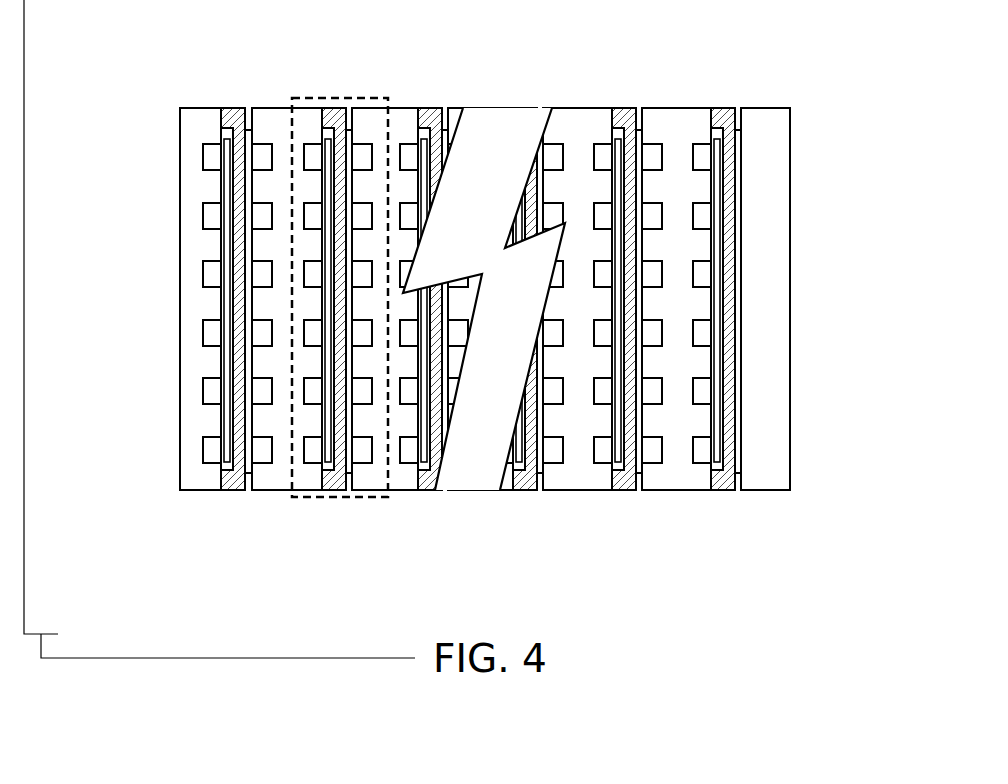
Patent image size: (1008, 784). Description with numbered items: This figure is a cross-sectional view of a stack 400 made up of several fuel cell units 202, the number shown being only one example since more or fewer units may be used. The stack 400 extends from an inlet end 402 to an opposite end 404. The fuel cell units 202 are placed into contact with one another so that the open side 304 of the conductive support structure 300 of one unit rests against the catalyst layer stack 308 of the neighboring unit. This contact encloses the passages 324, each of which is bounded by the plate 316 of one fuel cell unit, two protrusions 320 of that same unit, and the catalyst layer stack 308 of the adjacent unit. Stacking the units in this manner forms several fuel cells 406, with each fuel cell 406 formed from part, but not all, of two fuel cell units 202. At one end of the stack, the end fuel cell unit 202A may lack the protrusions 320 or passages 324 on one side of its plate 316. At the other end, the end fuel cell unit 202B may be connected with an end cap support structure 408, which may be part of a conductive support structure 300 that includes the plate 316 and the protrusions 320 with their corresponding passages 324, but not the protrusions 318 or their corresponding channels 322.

The stack 400 is at (186, 72).
The inlet end 402 is at (794, 287).
The opposite end 404 is at (176, 296).
The fuel cell 406 is at (343, 98).
The end cap support structure 408 is at (742, 498).
The fuel cell unit 202 is at (255, 508).
The fuel cell unit 202A is at (180, 508).
The fuel cell unit 202B is at (642, 523).
The conductive support structure 300 is at (543, 498).
The open side 304 is at (345, 240).
The catalyst layer stack 308 is at (708, 497).
The plate 316 is at (582, 180).
The protrusions 318 is at (602, 247).
The protrusions 320 is at (552, 363).
The channels 322 is at (602, 155).
The passages 324 is at (552, 213).